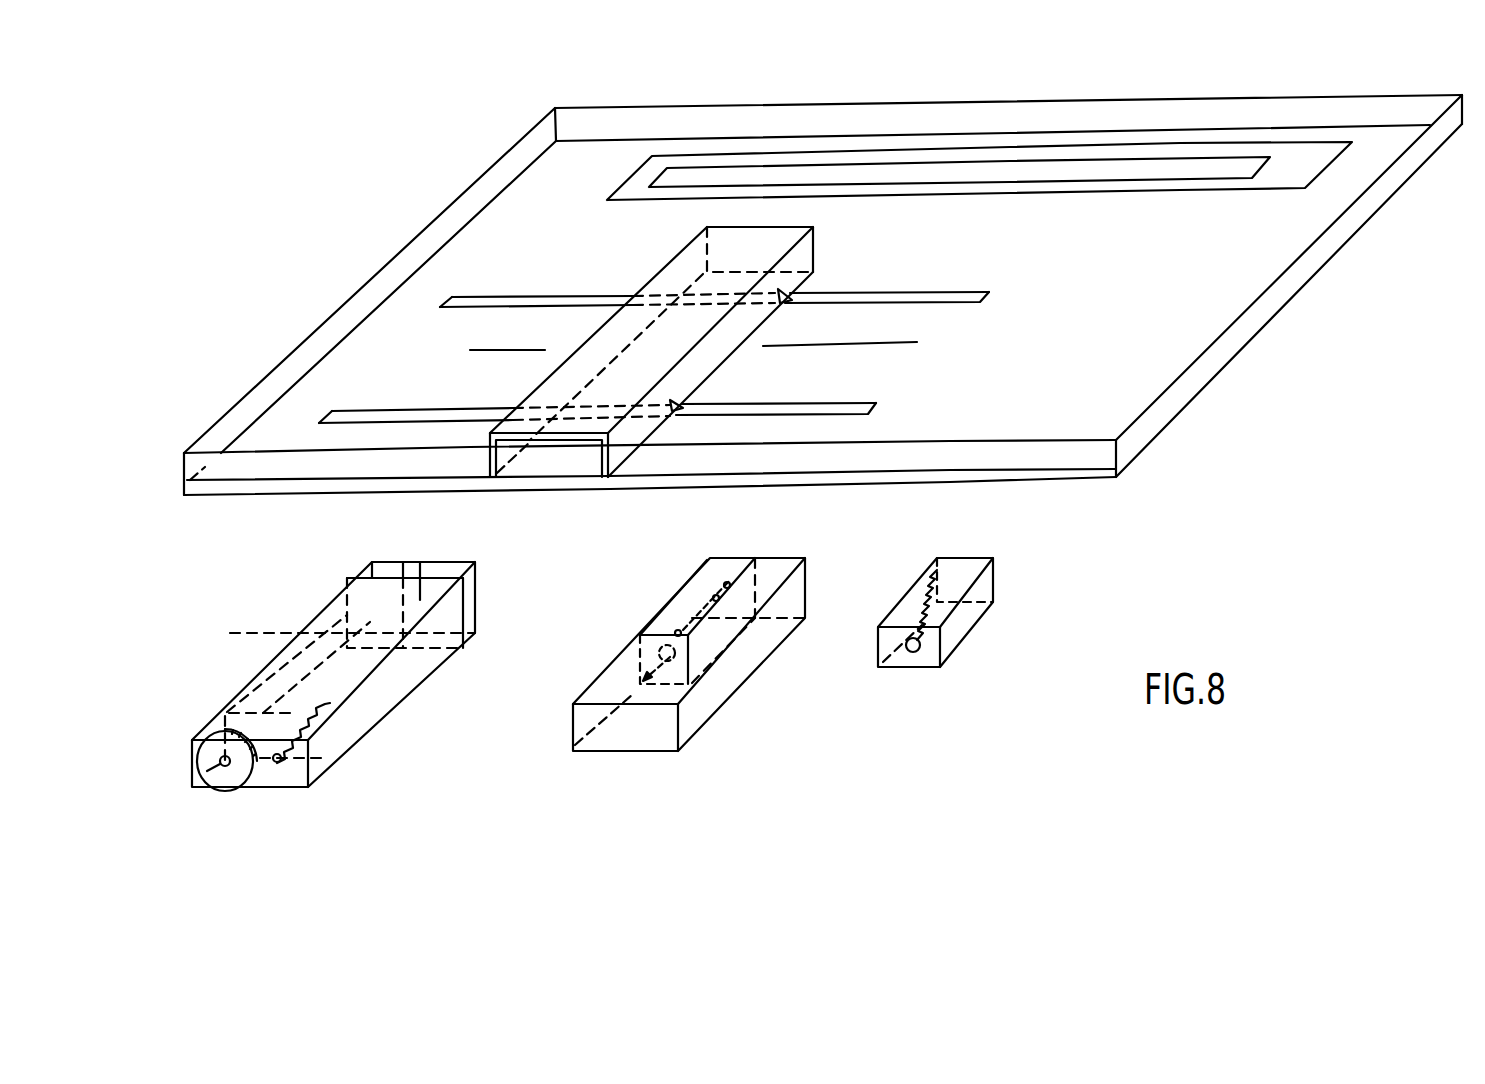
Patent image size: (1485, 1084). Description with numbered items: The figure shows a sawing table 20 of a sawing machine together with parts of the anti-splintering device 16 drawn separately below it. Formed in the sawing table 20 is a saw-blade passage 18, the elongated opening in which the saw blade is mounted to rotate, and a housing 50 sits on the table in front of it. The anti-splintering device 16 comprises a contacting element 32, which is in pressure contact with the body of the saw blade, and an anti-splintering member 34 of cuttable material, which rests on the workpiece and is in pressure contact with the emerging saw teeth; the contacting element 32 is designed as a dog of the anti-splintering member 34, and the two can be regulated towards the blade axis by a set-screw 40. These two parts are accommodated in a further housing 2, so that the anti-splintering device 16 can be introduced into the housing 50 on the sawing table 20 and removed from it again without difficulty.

The further housing 2 is at (403, 673).
The anti-splintering device 16 is at (388, 730).
The saw-blade passage 18 is at (1121, 171).
The sawing table 20 is at (1307, 258).
The contacting element 32 is at (393, 565).
The anti-splintering member 34 is at (452, 568).
The set-screw 40 is at (235, 790).
The housing 50 is at (812, 249).